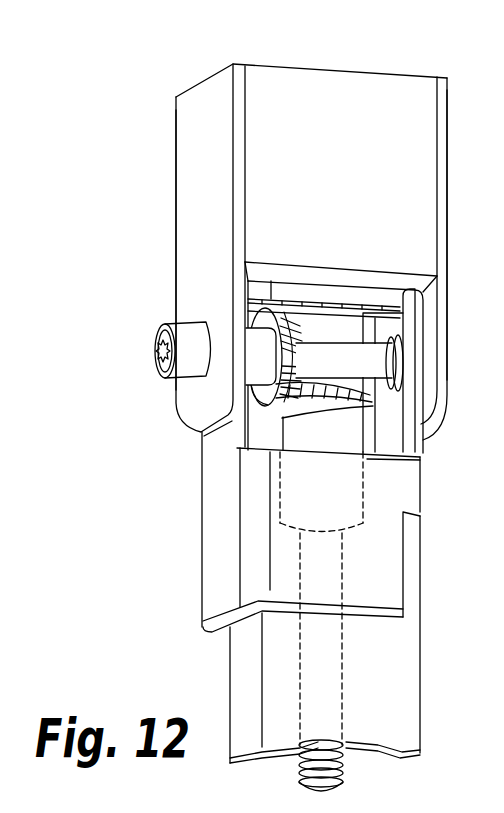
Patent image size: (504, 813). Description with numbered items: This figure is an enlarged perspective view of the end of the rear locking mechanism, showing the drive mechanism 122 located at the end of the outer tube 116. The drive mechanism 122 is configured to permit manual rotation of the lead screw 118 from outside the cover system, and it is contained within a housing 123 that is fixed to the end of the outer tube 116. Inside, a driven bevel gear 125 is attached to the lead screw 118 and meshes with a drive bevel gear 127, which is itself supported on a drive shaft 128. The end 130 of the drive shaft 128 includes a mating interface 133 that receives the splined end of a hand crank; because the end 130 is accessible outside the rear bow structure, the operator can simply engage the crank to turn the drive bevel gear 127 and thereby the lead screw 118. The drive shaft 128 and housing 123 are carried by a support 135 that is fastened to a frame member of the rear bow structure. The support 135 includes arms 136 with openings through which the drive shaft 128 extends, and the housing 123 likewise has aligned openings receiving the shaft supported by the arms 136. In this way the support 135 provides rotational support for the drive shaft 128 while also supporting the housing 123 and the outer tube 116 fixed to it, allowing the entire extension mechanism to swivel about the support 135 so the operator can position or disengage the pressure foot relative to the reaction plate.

The support 135 is at (372, 115).
The arms 136 is at (242, 342).
The drive bevel gear 127 is at (290, 322).
The drive shaft 128 is at (407, 402).
The driven bevel gear 125 is at (353, 407).
The end of the drive shaft 130 is at (174, 320).
The mating interface 133 is at (110, 365).
The drive mechanism 122 is at (258, 532).
The housing 123 is at (218, 522).
The outer tube 116 is at (393, 695).
The lead screw 118 is at (300, 777).